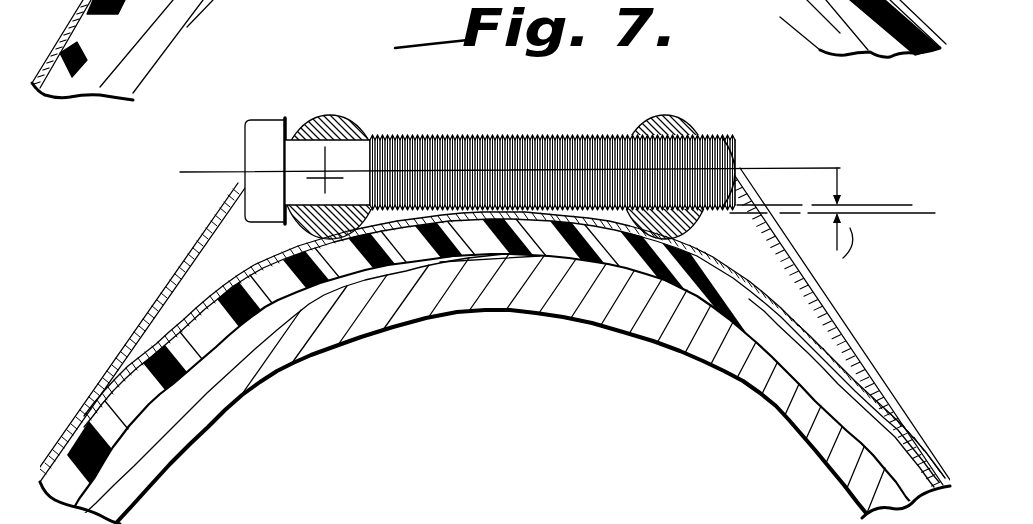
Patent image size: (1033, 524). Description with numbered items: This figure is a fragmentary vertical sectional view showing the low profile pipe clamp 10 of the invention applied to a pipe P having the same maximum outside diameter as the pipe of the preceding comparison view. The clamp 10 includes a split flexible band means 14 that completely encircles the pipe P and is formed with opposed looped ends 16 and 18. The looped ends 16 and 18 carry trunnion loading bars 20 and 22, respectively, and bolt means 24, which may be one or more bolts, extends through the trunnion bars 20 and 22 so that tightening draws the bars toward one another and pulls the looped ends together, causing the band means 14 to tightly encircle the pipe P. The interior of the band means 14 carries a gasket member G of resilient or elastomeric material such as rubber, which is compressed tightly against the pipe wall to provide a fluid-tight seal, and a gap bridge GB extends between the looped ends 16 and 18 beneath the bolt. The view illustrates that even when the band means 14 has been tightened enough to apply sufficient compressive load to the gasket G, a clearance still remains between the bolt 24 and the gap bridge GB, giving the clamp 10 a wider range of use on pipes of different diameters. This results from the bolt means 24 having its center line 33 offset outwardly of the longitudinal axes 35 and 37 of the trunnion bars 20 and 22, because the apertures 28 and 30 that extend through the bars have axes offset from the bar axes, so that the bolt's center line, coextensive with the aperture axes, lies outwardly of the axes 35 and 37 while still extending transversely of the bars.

The low profile pipe clamp 10 is at (912, 417).
The split flexible band means 14 is at (82, 432).
The looped end 16 is at (188, 257).
The looped end 18 is at (833, 300).
The trunnion loading bar 20 is at (328, 122).
The trunnion loading bar 22 is at (685, 122).
The bolt means 24 is at (737, 143).
The aperture 28 is at (578, 150).
The aperture 30 is at (633, 157).
The center line 33 is at (812, 167).
The axis 35 is at (327, 180).
The axis 37 is at (737, 190).
The gasket member G is at (350, 300).
The gap bridge GB is at (490, 257).
The pipe P is at (717, 377).